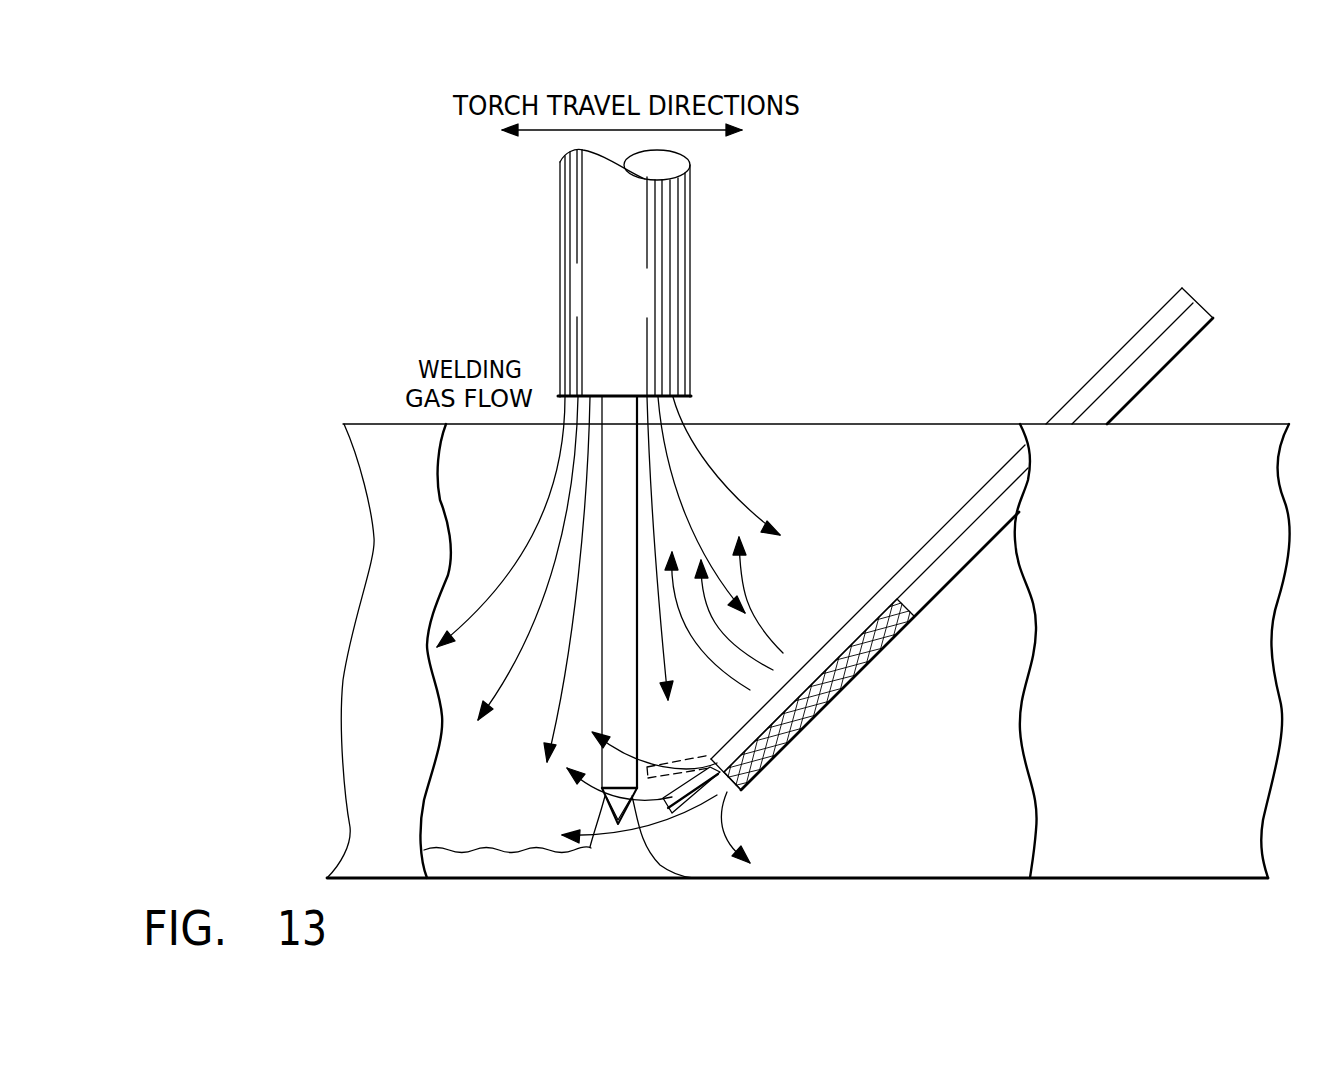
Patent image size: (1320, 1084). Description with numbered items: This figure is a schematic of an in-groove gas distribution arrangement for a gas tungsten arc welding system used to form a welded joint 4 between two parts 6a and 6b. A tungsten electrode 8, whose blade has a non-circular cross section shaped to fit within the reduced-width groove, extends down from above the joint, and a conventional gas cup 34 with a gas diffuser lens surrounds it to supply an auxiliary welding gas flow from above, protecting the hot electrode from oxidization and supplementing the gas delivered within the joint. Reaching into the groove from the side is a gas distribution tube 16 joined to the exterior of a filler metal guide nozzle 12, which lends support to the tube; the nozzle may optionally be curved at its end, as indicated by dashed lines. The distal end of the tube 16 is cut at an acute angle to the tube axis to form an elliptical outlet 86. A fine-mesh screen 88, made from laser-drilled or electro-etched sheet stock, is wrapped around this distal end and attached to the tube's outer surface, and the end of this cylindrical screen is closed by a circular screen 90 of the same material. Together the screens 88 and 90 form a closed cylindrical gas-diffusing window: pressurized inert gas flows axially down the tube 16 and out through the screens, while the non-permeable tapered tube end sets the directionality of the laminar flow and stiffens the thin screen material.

The welded joint 4 is at (508, 870).
The part 6a is at (836, 483).
The part 6b is at (1119, 610).
The tungsten electrode 8 is at (607, 662).
The filler metal guide nozzle 12 is at (930, 555).
The gas distribution tube 16 is at (938, 582).
The gas cup 34 is at (584, 288).
The elliptical outlet 86 is at (778, 710).
The fine-mesh screen 88 is at (827, 698).
The circular screen 90 is at (728, 785).